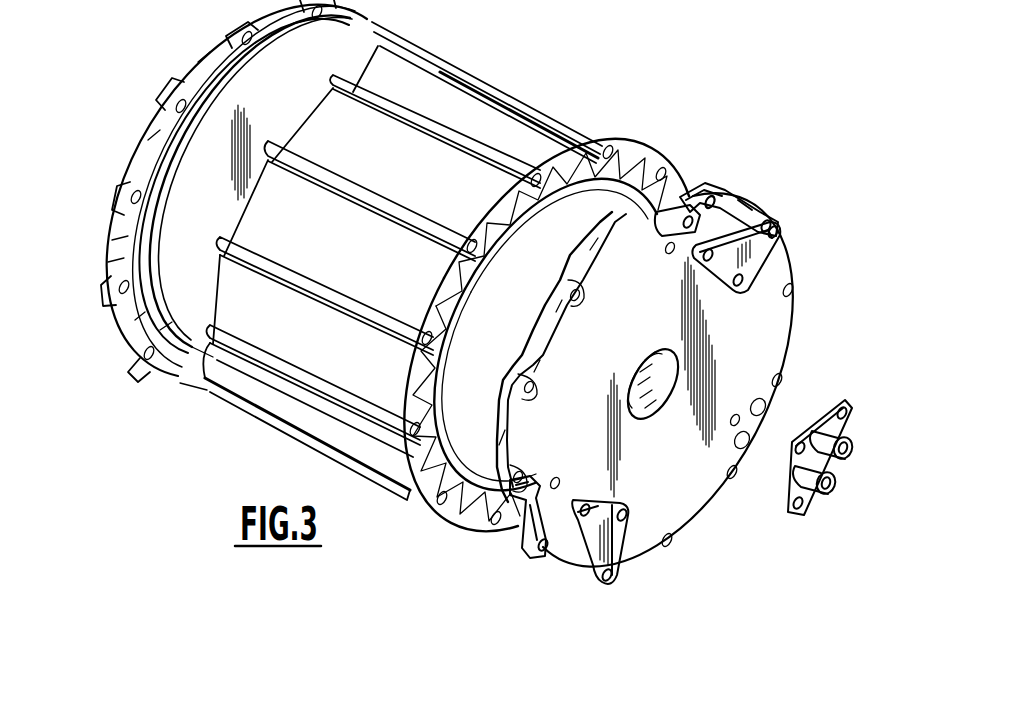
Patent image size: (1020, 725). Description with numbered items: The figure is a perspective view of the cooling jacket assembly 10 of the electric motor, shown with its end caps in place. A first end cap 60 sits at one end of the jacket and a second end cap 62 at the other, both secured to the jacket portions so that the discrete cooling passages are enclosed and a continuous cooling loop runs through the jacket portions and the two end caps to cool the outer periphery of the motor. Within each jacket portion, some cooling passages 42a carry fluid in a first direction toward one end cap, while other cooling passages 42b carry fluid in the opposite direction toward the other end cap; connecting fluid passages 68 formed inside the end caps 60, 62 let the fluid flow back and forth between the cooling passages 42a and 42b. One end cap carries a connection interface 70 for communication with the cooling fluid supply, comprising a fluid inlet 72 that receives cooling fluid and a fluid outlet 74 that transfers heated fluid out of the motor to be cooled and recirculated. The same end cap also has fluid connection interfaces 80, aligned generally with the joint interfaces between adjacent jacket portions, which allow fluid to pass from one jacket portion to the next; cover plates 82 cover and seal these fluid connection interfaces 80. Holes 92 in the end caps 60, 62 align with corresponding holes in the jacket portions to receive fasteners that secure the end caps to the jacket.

The electric motor assembly 10 is at (590, 83).
The first end cap 60 is at (187, 72).
The second end cap 62 is at (776, 277).
The connecting fluid passages 68 is at (140, 300).
The connection interface 70 is at (839, 453).
The fluid inlet 72 is at (836, 441).
The fluid outlet 74 is at (811, 496).
The fluid connection interfaces 80 is at (683, 197).
The cover plates 82 is at (760, 256).
The holes 92 is at (556, 337).
The cooling passages 42a is at (593, 158).
The cooling passages 42b is at (495, 252).